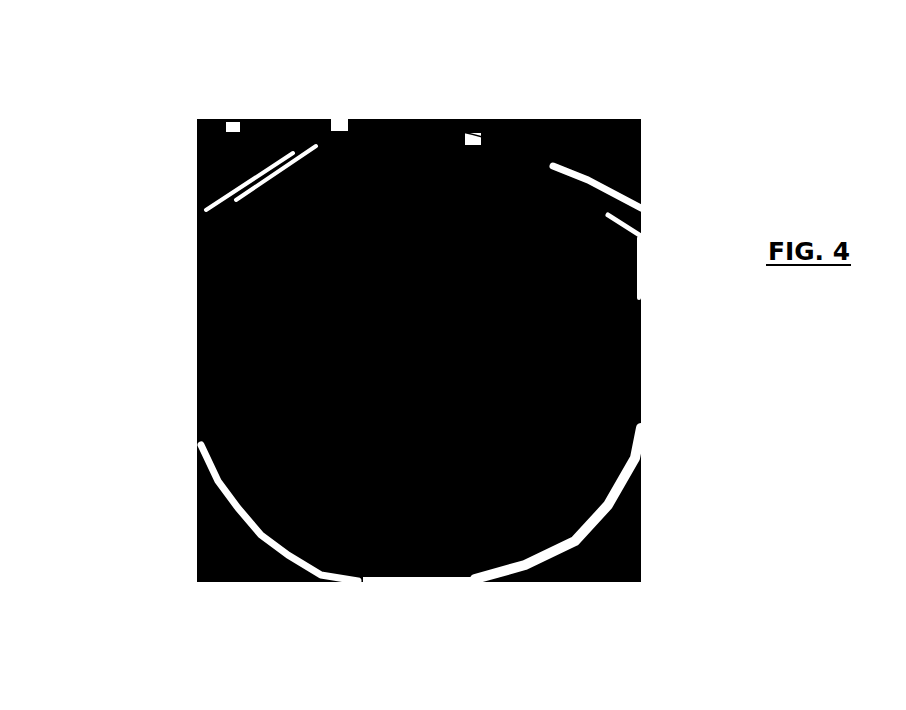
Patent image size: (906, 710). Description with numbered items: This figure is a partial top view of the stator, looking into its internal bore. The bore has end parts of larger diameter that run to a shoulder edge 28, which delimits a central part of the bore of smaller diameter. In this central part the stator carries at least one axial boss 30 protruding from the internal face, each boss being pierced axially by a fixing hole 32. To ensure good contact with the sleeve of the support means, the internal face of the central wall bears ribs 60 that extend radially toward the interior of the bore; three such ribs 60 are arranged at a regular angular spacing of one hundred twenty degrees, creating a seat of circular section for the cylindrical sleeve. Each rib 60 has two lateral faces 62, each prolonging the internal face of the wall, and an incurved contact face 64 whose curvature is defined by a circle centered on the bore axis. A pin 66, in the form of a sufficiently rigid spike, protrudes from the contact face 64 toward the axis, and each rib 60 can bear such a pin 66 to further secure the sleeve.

The shoulder edge 28 is at (203, 322).
The axial boss 30 is at (218, 353).
The fixing hole 32 is at (230, 248).
The rib 60 is at (560, 415).
The lateral faces 62 is at (350, 163).
The contact face 64 is at (501, 177).
The pin 66 is at (348, 517).